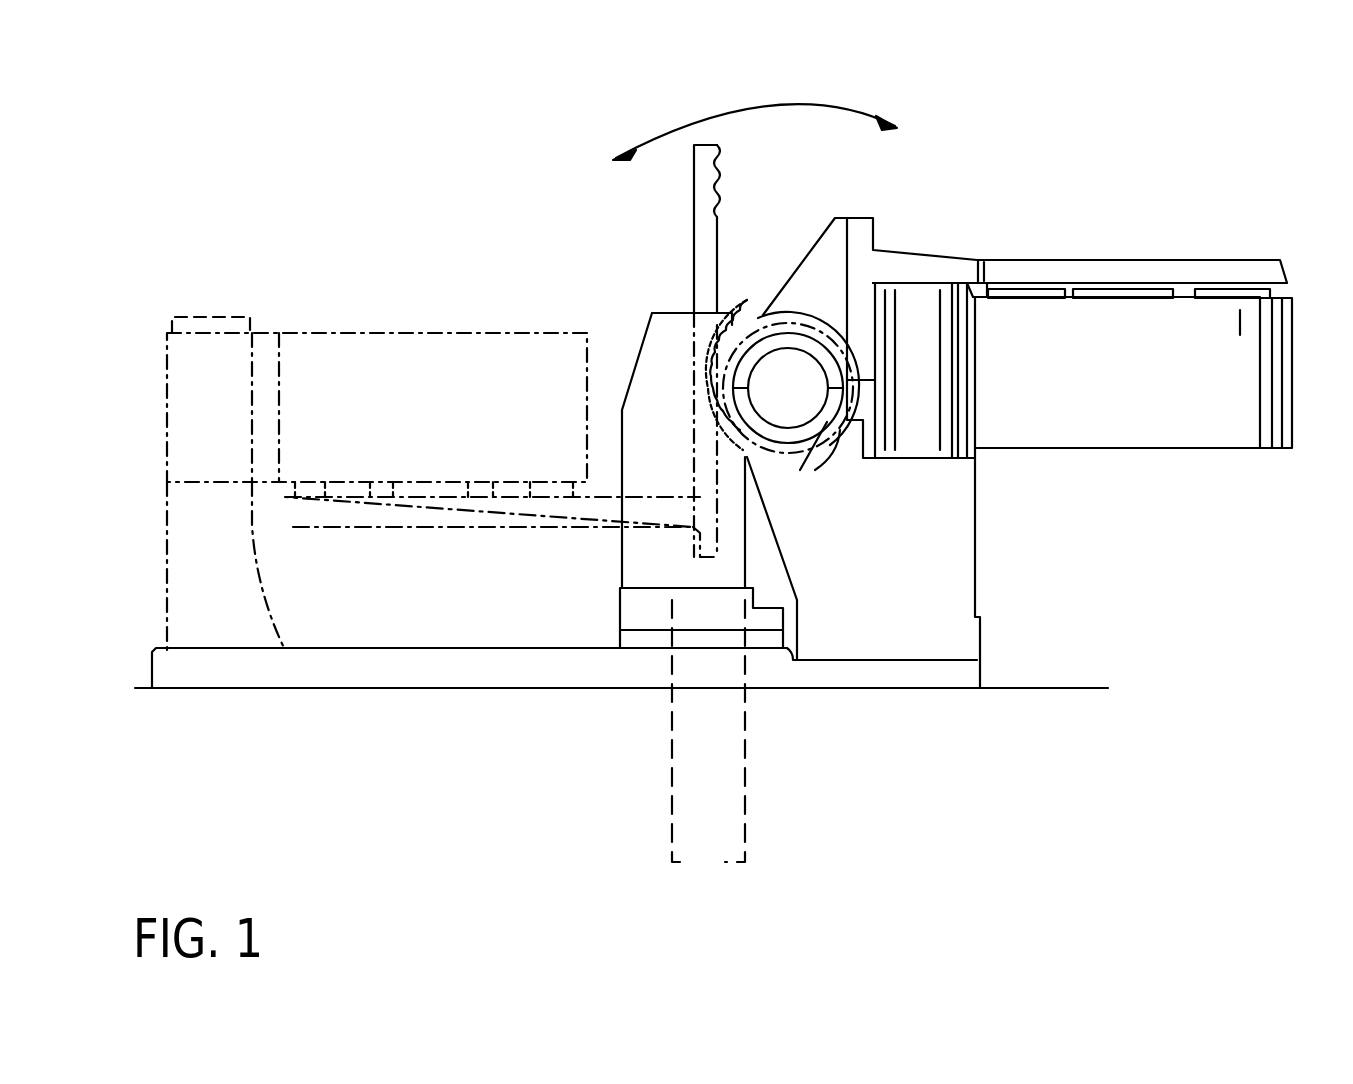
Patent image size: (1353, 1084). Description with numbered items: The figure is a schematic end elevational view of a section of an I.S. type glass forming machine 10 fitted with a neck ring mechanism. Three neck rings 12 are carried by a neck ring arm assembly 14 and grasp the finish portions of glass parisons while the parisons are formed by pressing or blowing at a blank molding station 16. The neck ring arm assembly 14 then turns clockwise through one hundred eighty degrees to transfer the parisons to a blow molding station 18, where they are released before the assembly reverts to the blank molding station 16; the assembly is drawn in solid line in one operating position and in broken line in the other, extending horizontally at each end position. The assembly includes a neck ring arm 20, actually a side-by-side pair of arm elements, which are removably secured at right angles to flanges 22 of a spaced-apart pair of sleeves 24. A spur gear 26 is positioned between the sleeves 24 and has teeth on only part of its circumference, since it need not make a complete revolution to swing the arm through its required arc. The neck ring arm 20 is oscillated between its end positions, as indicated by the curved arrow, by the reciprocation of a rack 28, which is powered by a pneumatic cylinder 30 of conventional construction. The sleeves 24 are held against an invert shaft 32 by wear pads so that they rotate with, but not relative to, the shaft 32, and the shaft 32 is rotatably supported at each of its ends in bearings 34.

The glass forming machine 10 is at (817, 197).
The neck rings 12 is at (1180, 287).
The neck ring arm assembly 14 is at (380, 527).
The blank molding station 16 is at (363, 330).
The blow molding station 18 is at (1143, 450).
The neck ring arm 20 is at (1003, 255).
The flanges 22 is at (815, 237).
The sleeves 24 is at (810, 320).
The spur gear 26 is at (745, 325).
The rack 28 is at (703, 145).
The pneumatic cylinder 30 is at (745, 745).
The invert shaft 32 is at (812, 428).
The bearings 34 is at (815, 440).